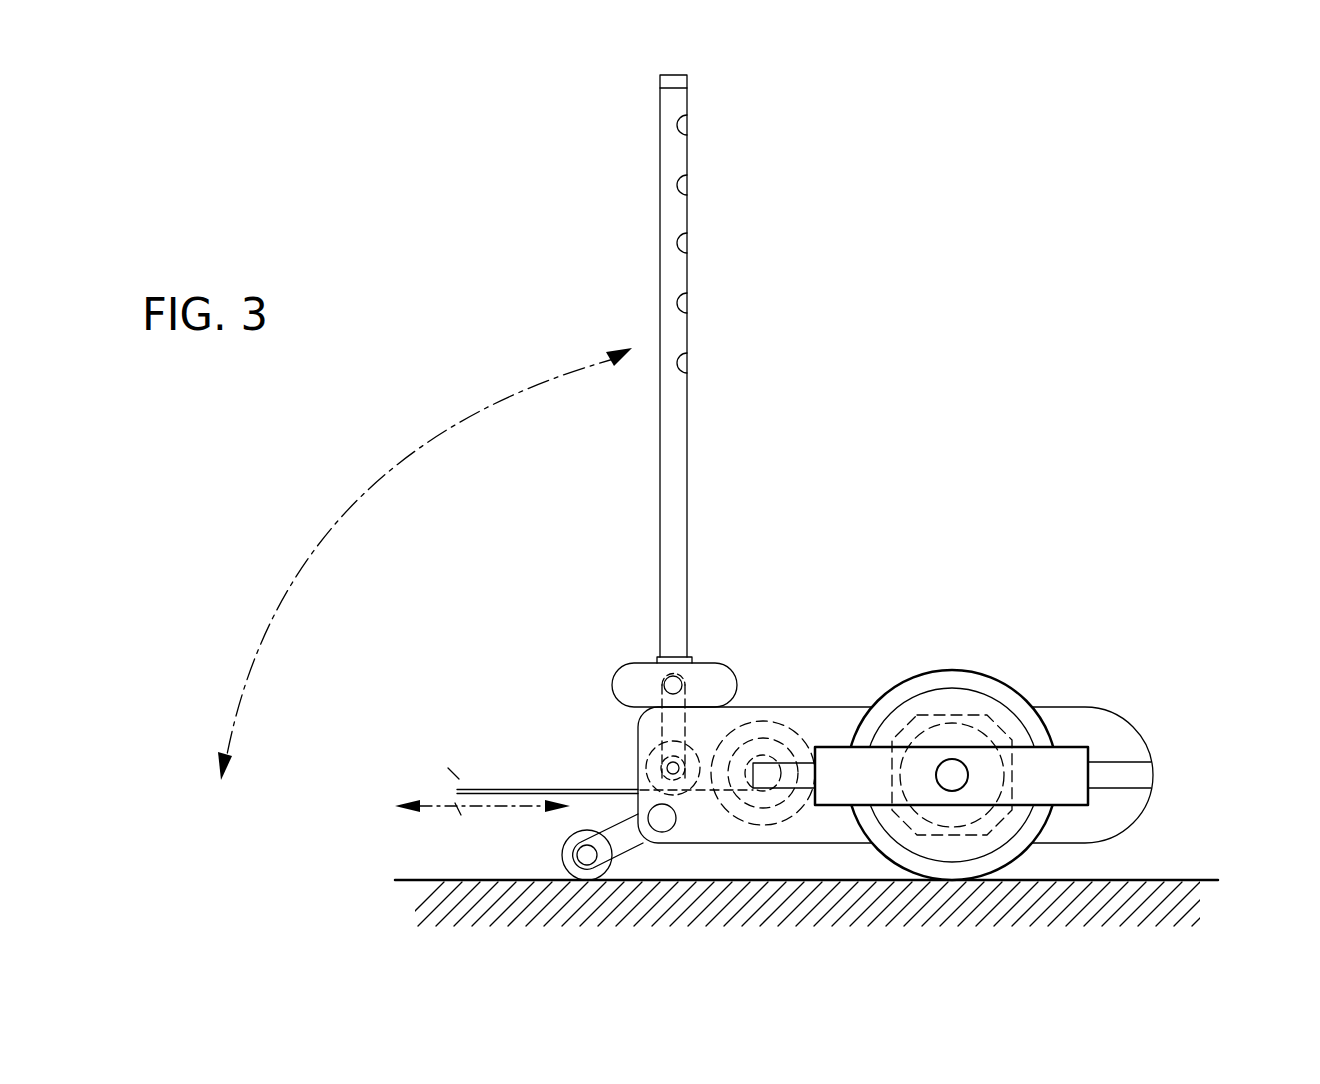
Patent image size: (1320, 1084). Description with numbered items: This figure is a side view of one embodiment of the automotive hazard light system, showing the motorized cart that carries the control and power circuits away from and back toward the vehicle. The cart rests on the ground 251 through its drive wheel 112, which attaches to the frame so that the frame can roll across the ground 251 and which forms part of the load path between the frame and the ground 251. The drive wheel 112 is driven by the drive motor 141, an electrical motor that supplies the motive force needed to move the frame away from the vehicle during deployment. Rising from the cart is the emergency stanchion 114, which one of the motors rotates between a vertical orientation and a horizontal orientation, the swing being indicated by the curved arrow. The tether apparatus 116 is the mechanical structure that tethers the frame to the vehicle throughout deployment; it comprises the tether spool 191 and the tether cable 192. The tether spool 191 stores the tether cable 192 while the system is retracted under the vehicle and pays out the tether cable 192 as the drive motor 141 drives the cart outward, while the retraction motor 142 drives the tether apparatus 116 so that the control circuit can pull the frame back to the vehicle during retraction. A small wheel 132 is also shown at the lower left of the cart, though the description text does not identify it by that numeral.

The emergency stanchion 114 is at (687, 477).
The tether apparatus 116 is at (752, 708).
The tether spool 191 is at (775, 722).
The retraction motor 142 is at (785, 753).
The drive wheel 112 is at (975, 678).
The drive motor 141 is at (980, 738).
The tether cable 192 is at (525, 790).
The caster wheel 132 is at (570, 848).
The ground 251 is at (1155, 880).